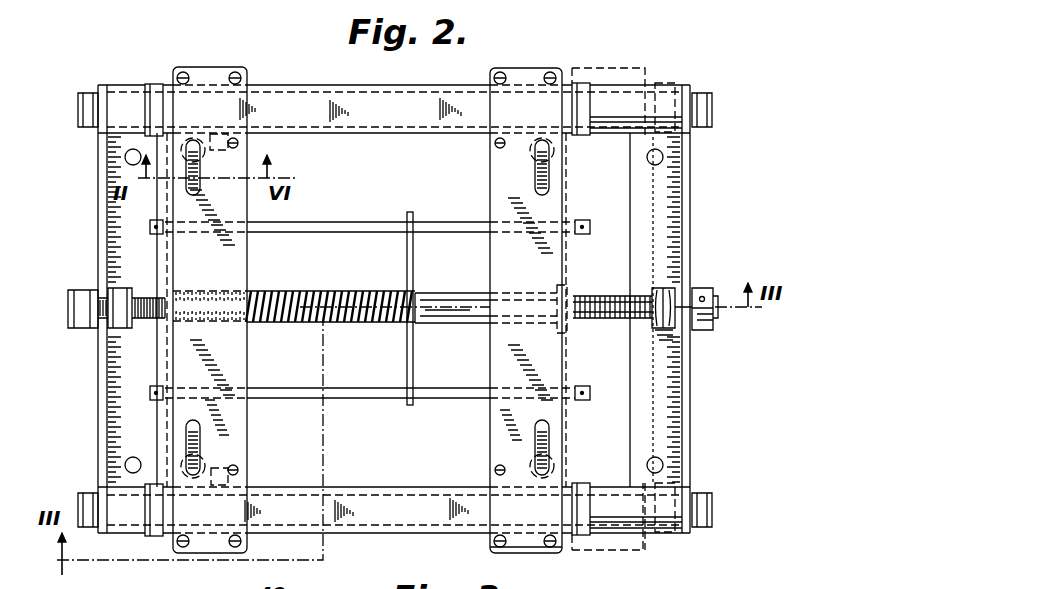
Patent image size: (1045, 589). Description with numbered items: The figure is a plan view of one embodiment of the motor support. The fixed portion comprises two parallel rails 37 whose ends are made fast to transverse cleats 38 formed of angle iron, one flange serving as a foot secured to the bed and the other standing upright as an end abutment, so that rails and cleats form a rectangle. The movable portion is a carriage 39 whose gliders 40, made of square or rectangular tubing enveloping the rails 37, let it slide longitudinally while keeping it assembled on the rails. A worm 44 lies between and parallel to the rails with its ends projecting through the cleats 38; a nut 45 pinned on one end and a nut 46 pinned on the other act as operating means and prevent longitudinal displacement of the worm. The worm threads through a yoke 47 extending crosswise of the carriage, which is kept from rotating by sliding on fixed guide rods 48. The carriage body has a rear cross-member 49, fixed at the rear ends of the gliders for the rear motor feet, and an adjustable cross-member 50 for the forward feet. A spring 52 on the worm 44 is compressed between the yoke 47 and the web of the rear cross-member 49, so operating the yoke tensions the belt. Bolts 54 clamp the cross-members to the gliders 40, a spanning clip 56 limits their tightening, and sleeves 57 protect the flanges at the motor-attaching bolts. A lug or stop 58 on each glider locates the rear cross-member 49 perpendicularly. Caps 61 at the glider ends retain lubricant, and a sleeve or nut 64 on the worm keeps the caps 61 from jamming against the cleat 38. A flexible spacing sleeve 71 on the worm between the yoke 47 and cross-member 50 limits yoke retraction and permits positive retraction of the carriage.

The rails 37 is at (623, 100).
The transverse cleats 38 is at (98, 405).
The carriage 39 is at (537, 68).
The gliders 40 is at (428, 90).
The worm 44 is at (606, 296).
The nut 45 is at (703, 331).
The nut 46 is at (75, 328).
The yoke 47 is at (413, 364).
The guide rods 48 is at (446, 224).
The rear cross-member 49 is at (249, 372).
The adjustable cross-member 50 is at (488, 258).
The spring 52 is at (288, 291).
The bolts 54 is at (494, 145).
The spanning clip 56 is at (506, 550).
The sleeves 57 is at (536, 172).
The lug or stop 58 is at (230, 468).
The cap 61 is at (150, 84).
The sleeve or nut 64 is at (118, 288).
The spacing sleeve 71 is at (457, 328).